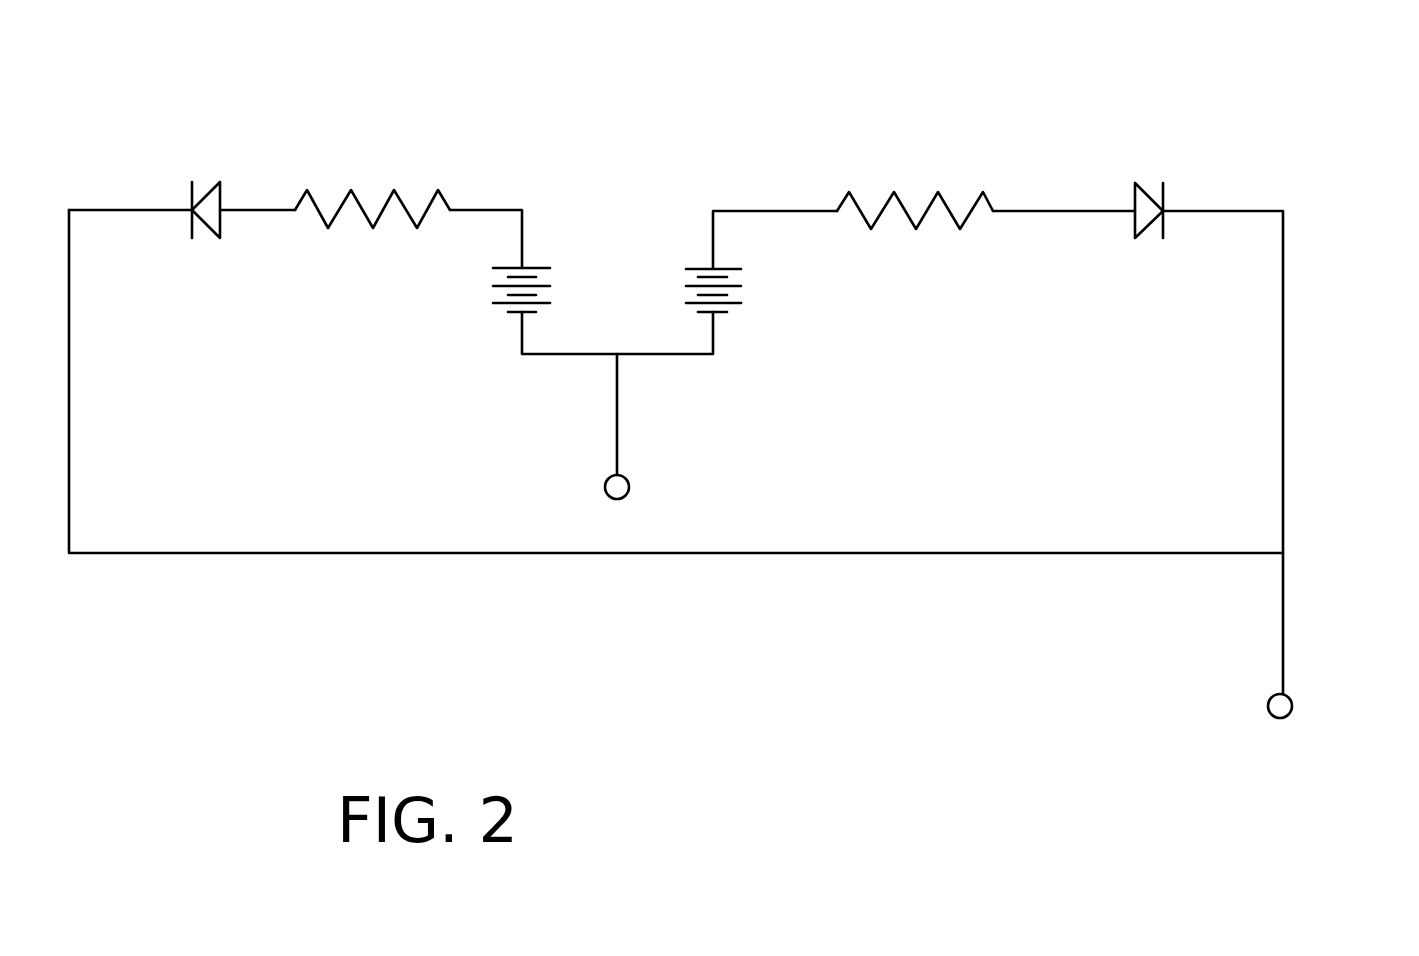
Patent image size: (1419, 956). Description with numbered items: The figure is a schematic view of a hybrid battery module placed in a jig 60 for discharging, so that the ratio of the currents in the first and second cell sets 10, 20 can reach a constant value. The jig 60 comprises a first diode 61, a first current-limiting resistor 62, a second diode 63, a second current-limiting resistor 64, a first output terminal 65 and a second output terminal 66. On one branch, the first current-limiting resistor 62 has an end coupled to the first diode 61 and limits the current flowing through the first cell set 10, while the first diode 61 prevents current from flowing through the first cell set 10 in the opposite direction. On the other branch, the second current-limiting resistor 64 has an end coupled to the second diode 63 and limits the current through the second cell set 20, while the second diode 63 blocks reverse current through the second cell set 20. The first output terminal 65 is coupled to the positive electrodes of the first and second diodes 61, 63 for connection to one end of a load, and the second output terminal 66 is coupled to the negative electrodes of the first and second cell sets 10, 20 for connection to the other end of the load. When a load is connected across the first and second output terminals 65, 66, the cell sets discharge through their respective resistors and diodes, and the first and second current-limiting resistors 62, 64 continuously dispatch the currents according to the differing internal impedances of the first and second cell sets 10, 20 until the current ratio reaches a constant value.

The jig 60 is at (1305, 250).
The first diode 61 is at (216, 188).
The first current-limiting resistor 62 is at (414, 195).
The first cell set 10 is at (533, 262).
The second cell set 20 is at (731, 262).
The second current-limiting resistor 64 is at (958, 200).
The second diode 63 is at (1177, 198).
The second output terminal 66 is at (626, 488).
The first output terminal 65 is at (1272, 701).